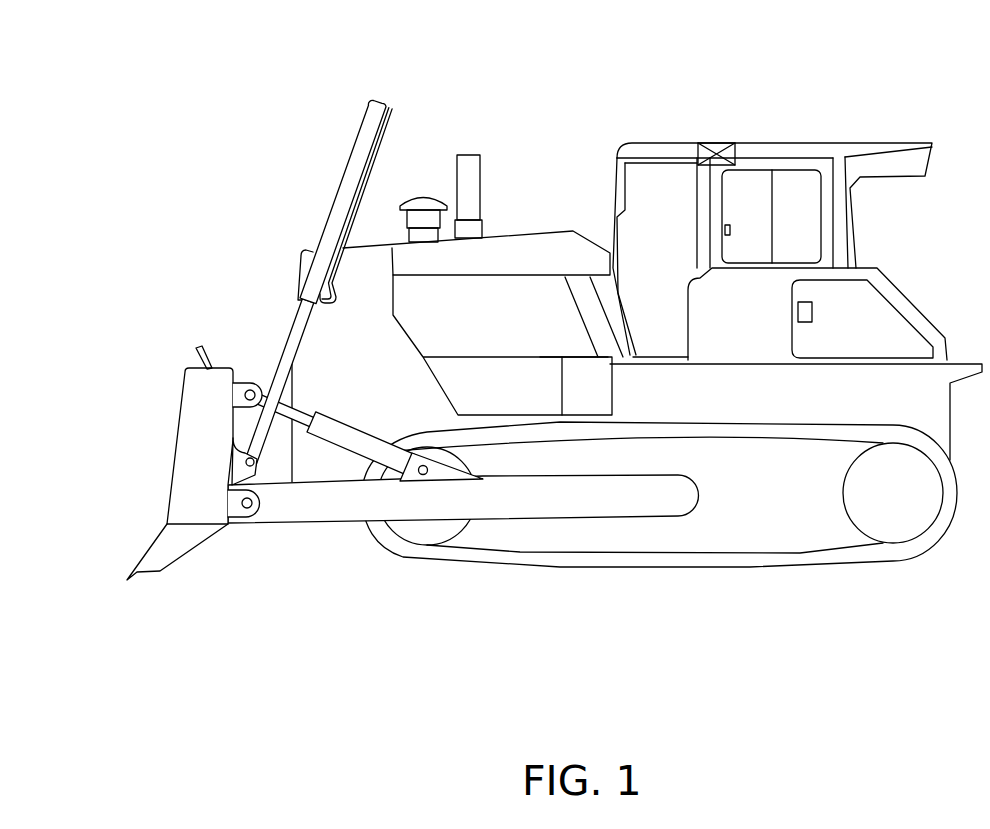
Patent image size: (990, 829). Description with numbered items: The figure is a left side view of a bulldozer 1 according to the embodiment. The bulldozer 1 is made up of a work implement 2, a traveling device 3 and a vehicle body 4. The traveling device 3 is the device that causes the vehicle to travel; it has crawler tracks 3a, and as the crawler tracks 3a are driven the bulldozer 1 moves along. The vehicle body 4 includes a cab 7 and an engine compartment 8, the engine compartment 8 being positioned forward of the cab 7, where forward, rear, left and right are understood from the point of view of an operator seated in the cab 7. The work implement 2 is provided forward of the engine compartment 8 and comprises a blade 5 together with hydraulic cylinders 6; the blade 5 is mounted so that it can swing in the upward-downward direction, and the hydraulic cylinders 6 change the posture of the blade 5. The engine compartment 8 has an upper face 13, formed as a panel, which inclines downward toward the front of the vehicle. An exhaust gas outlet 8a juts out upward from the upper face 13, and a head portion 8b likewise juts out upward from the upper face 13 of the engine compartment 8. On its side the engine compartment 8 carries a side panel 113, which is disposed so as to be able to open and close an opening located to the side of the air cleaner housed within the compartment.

The bulldozer 1 is at (268, 88).
The work implement 2 is at (200, 334).
The traveling device 3 is at (512, 576).
The crawler tracks 3a is at (618, 563).
The vehicle body 4 is at (780, 80).
The blade 5 is at (182, 462).
The hydraulic cylinders 6 is at (293, 338).
The cab 7 is at (650, 142).
The engine compartment 8 is at (547, 247).
The exhaust gas outlet 8a is at (468, 153).
The head portion 8b is at (417, 196).
The upper face 13 is at (508, 222).
The side panel 113 is at (560, 317).